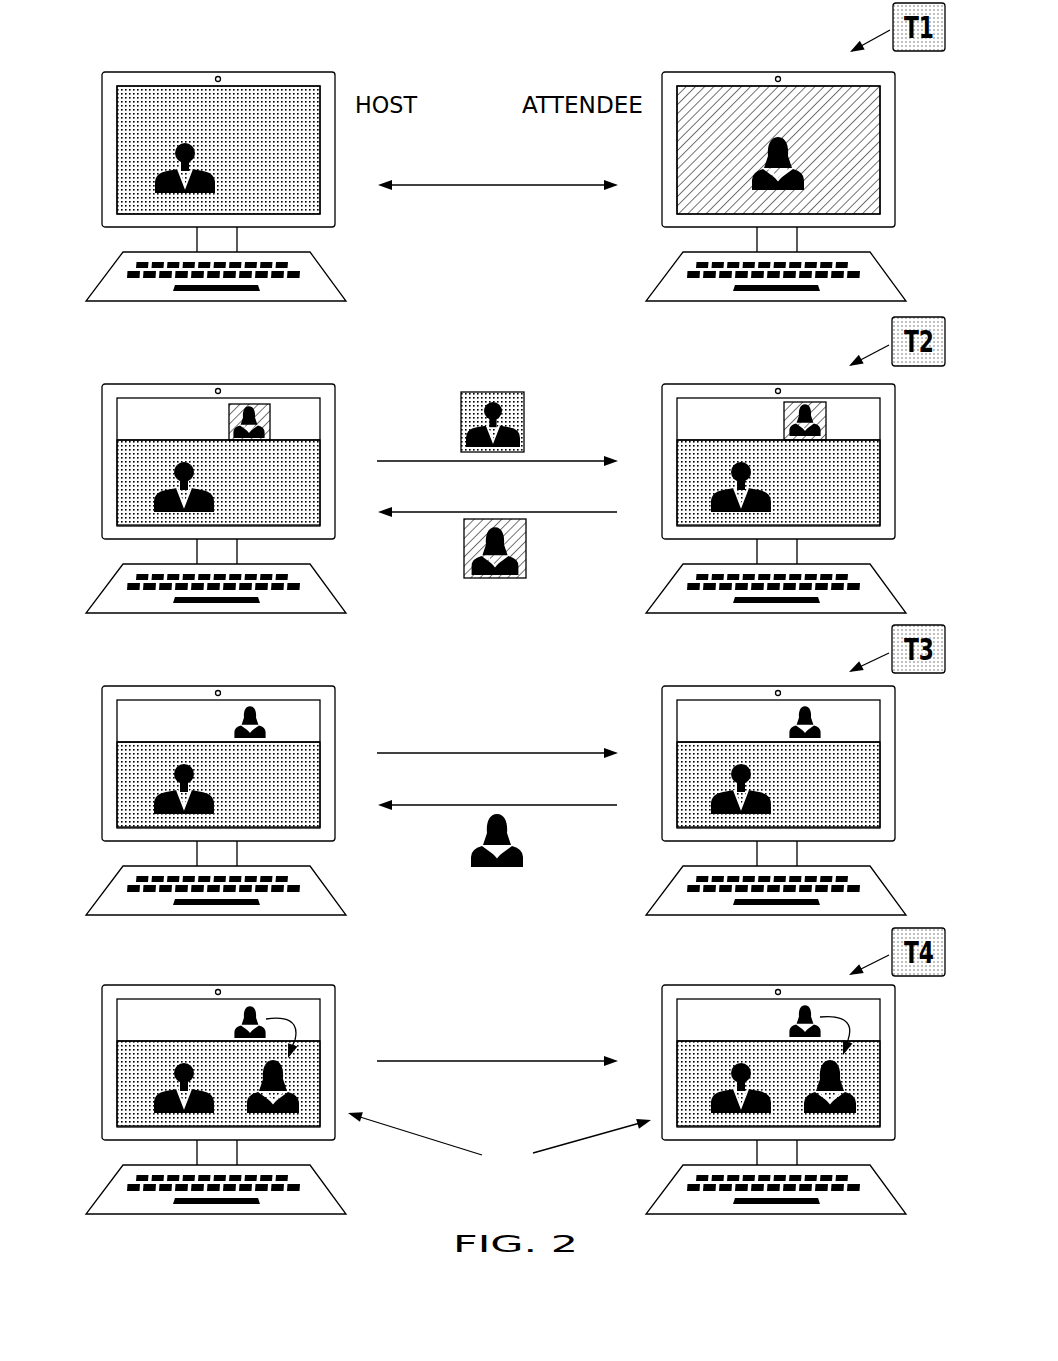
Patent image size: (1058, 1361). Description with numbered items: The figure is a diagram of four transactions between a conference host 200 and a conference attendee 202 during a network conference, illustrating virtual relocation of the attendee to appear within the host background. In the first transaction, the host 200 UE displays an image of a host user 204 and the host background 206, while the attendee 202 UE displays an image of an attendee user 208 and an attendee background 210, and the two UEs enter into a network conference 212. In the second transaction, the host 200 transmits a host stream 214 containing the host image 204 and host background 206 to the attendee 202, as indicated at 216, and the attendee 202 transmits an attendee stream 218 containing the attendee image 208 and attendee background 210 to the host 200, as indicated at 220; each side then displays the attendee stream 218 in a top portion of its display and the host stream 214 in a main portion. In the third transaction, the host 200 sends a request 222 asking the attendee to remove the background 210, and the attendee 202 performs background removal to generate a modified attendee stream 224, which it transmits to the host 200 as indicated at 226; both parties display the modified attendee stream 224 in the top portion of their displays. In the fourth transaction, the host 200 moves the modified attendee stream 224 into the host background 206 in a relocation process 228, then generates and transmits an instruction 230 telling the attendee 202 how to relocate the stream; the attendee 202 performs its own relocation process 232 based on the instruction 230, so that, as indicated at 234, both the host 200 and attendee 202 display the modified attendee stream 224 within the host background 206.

The conference host 200 is at (340, 80).
The conference attendee 202 is at (661, 86).
The host user image 204 is at (153, 182).
The host background 206 is at (138, 117).
The attendee user image 208 is at (807, 182).
The attendee background 210 is at (857, 112).
The network conference 212 is at (495, 184).
The host stream 214 is at (493, 392).
The transmission of host stream 216 is at (427, 460).
The attendee stream 218 is at (497, 579).
The transmission of attendee stream 220 is at (427, 511).
The request 222 is at (447, 752).
The modified attendee stream 224 is at (495, 864).
The transmission of modified attendee stream 226 is at (447, 804).
The relocation process 228 is at (291, 1018).
The instruction 230 is at (447, 1060).
The relocation process 232 is at (846, 1017).
The resulting display 234 is at (500, 1137).